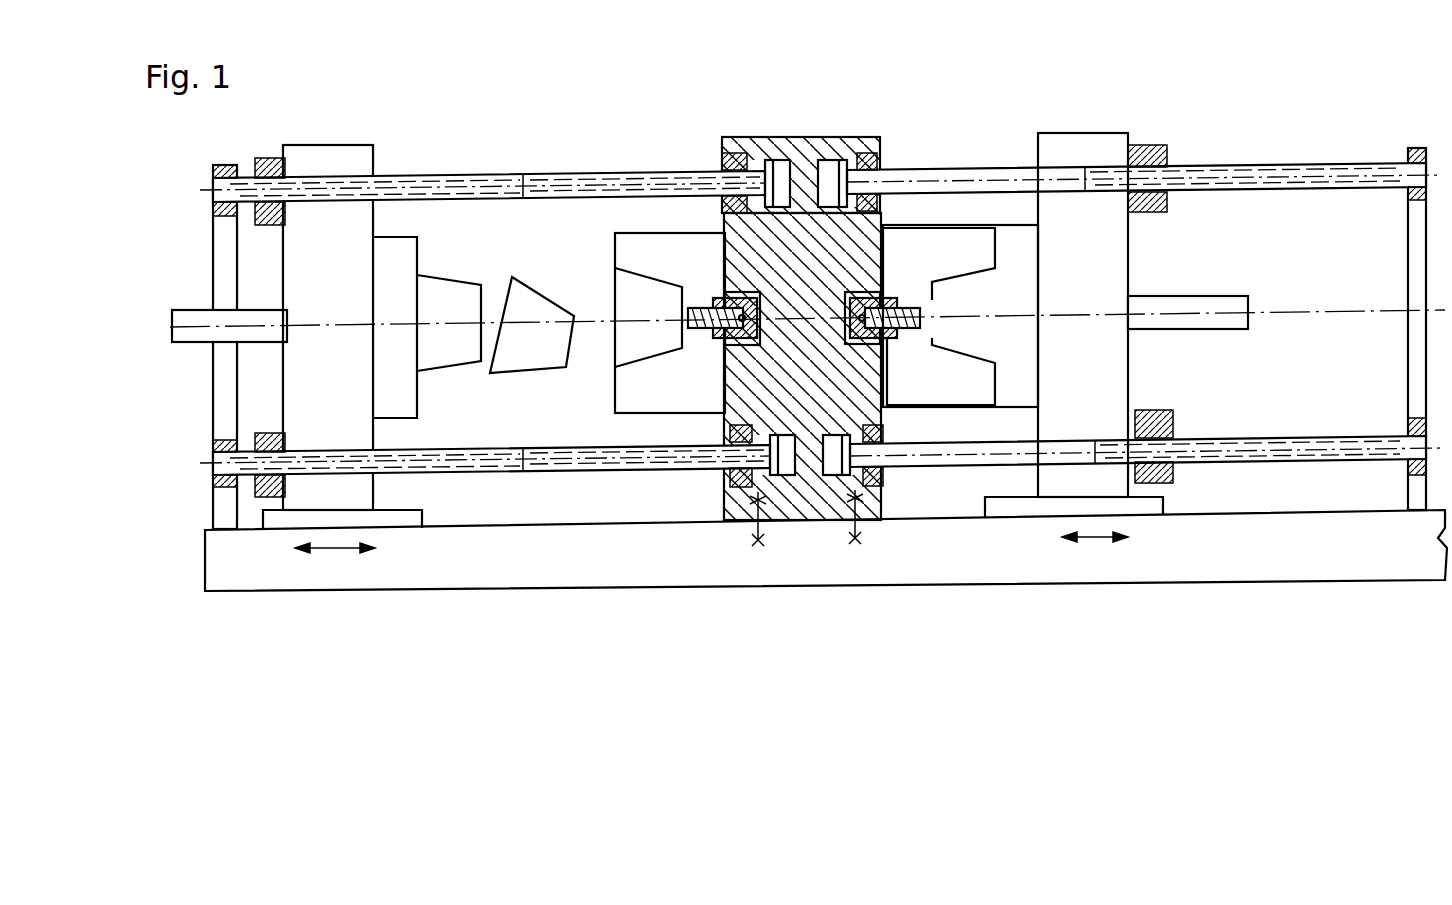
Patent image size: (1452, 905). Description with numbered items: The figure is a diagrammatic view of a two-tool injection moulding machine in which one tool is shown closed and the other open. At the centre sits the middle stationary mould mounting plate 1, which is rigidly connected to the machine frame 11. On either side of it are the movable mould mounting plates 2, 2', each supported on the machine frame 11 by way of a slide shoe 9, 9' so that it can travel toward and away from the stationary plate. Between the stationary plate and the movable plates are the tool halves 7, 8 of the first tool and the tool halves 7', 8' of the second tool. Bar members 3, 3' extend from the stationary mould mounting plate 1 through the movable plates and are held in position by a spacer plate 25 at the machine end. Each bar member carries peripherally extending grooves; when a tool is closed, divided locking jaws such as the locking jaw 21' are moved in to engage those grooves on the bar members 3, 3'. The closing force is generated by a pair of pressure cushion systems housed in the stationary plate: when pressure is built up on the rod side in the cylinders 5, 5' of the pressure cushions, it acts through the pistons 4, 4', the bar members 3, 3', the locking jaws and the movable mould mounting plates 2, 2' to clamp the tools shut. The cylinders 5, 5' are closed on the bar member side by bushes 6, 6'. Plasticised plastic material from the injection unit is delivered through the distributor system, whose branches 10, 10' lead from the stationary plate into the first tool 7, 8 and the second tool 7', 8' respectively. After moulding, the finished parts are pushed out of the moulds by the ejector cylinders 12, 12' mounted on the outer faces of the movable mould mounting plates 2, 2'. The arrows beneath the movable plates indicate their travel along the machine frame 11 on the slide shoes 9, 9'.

The middle stationary mould mounting plate 1 is at (800, 150).
The movable mould mounting plate 2 is at (1083, 274).
The movable mould mounting plate 2' is at (328, 289).
The bar member 3 is at (1143, 359).
The bar member 3' is at (485, 270).
The piston 4 is at (847, 271).
The piston 4' is at (777, 262).
The cylinder of the pressure cushion 5 is at (860, 119).
The cylinder of the pressure cushion 5' is at (726, 134).
The bush 6 is at (838, 269).
The bush 6' is at (755, 139).
The tool half 7 is at (939, 447).
The tool half 7' is at (671, 450).
The tool half 8 is at (972, 446).
The tool half 8' is at (447, 452).
The slide shoe 9 is at (1088, 582).
The slide shoe 9' is at (349, 588).
The distributor system 10 is at (897, 479).
The distributor system 10' is at (774, 479).
The machine frame 11 is at (575, 565).
The ejector cylinder 12 is at (1209, 203).
The ejector cylinder 12' is at (217, 274).
The locking jaw 21' is at (269, 285).
The spacer plate 25 is at (230, 520).